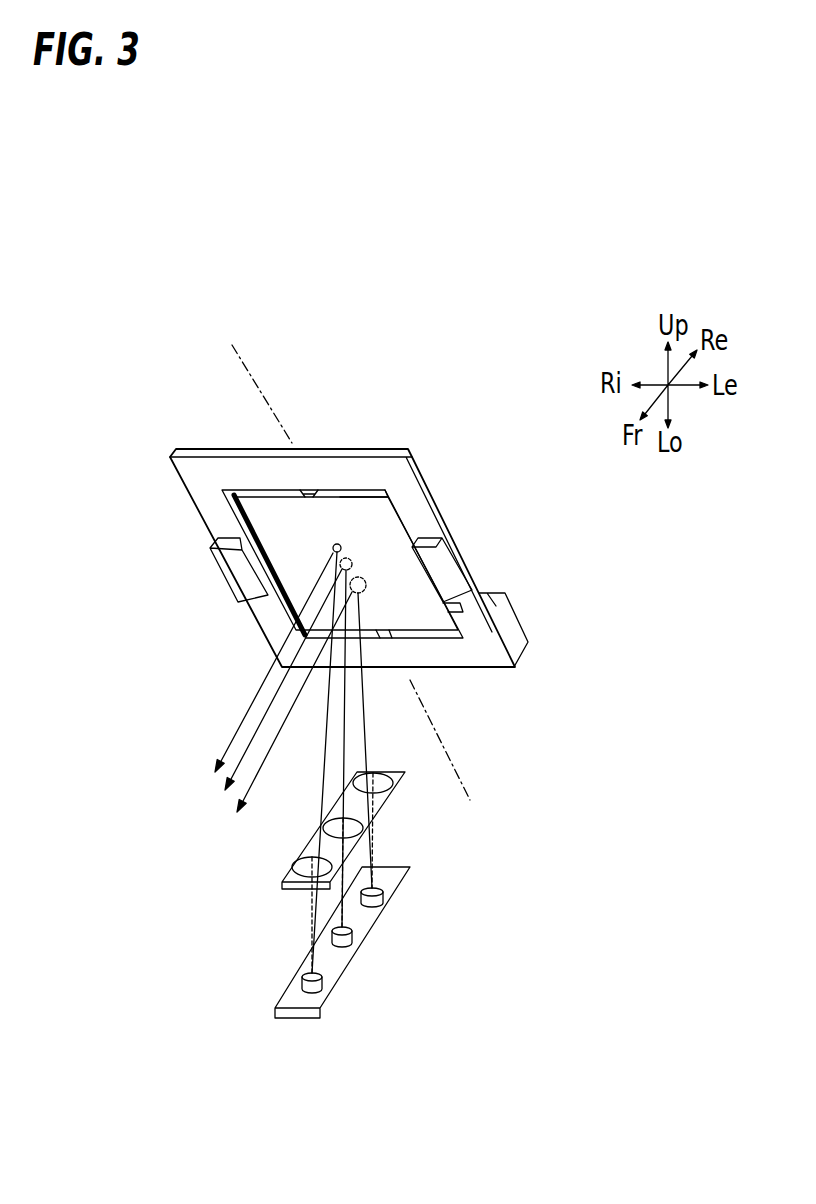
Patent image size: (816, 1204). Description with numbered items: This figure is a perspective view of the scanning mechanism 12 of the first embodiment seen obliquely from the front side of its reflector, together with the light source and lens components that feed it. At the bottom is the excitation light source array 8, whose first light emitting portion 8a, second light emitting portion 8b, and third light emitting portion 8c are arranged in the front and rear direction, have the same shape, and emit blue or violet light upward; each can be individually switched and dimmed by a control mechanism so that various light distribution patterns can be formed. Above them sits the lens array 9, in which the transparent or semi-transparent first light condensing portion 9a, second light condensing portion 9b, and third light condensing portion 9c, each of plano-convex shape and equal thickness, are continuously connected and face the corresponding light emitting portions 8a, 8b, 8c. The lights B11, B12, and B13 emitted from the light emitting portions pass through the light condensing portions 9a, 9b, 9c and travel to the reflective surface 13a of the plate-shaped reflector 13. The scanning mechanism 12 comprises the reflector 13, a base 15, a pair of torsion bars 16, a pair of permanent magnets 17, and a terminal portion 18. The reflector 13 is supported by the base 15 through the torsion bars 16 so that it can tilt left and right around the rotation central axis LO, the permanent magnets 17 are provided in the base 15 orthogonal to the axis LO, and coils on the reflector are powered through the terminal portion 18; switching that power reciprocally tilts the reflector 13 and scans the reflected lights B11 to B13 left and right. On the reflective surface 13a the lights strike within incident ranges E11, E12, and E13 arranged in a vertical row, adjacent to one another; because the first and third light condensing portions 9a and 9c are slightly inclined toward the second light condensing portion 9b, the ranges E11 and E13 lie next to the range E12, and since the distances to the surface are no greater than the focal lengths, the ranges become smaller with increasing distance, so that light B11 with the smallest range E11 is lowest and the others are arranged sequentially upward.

The scanning mechanism 12 is at (382, 575).
The base 15 is at (192, 452).
The reflector 13 is at (447, 610).
The reflective surface 13a is at (352, 517).
The torsion bars 16 is at (307, 490).
The permanent magnets 17 is at (230, 578).
The terminal portion 18 is at (517, 638).
The rotation central axis LO is at (240, 356).
The incident range E11 is at (333, 546).
The incident range E12 is at (352, 568).
The incident range E13 is at (364, 580).
The light B11 is at (254, 700).
The light B12 is at (253, 733).
The light B13 is at (248, 788).
The lens array 9 is at (337, 872).
The first light condensing portion 9a is at (293, 867).
The second light condensing portion 9b is at (363, 833).
The third light condensing portion 9c is at (393, 791).
The excitation light source array 8 is at (381, 929).
The first light emitting portion 8a is at (323, 983).
The second light emitting portion 8b is at (353, 938).
The third light emitting portion 8c is at (383, 898).